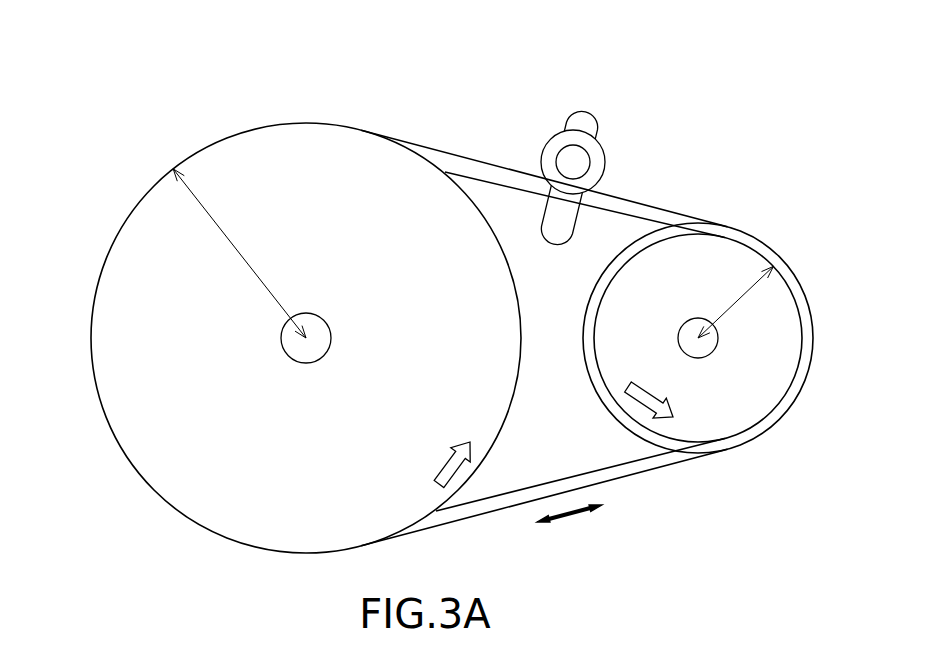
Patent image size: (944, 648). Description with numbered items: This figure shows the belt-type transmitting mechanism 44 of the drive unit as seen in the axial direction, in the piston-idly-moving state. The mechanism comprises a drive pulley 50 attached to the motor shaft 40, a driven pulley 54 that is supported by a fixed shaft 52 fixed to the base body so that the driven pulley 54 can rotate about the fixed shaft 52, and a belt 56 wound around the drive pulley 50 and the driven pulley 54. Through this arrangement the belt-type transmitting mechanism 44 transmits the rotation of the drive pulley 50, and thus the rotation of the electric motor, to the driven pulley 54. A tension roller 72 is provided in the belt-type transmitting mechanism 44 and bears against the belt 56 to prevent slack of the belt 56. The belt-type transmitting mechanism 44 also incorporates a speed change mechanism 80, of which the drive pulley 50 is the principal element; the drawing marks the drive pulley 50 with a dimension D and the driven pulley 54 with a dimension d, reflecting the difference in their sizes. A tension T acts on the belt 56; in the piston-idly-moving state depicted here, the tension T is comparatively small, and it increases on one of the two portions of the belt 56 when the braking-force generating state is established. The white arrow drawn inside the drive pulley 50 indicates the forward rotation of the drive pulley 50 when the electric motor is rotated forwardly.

The belt-type transmitting mechanism 44 is at (523, 60).
The driven pulley 54 is at (205, 508).
The fixed shaft 52 is at (283, 342).
The speed change mechanism 80 is at (760, 218).
The drive pulley 50 is at (790, 392).
The motor shaft 40 is at (705, 348).
The tension roller 72 is at (603, 157).
The belt 56 is at (548, 490).
The radius of large pulley d is at (239, 253).
The radius of small pulley D is at (735, 302).
The tension T is at (569, 528).